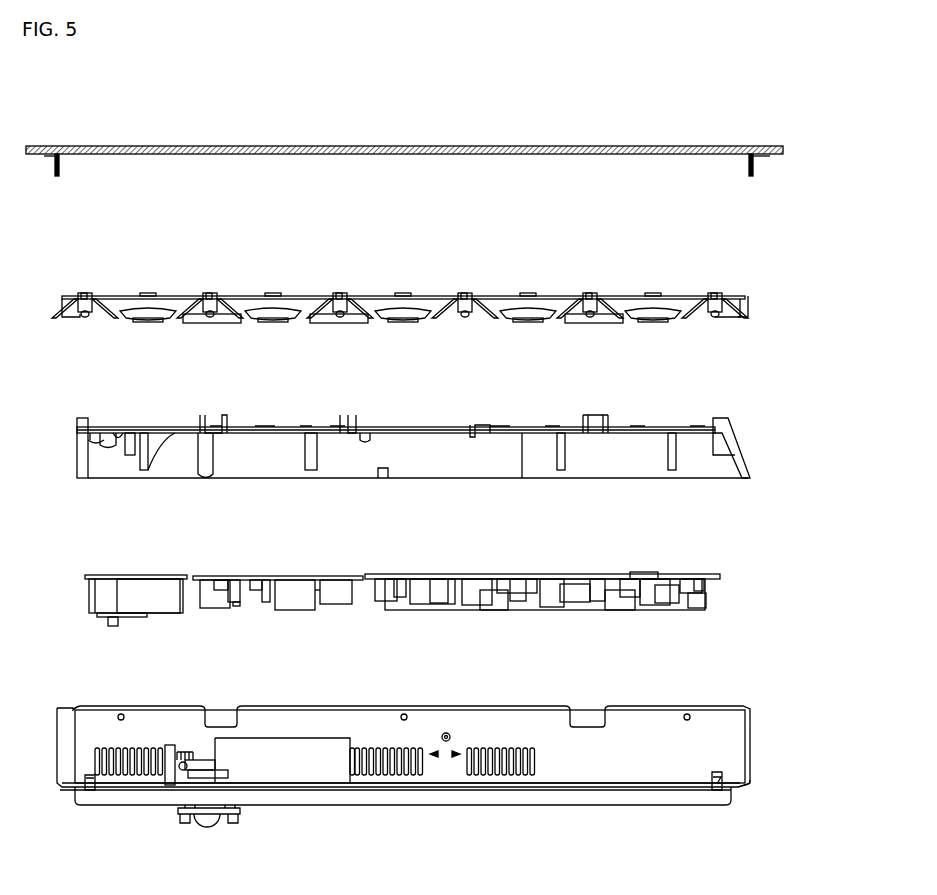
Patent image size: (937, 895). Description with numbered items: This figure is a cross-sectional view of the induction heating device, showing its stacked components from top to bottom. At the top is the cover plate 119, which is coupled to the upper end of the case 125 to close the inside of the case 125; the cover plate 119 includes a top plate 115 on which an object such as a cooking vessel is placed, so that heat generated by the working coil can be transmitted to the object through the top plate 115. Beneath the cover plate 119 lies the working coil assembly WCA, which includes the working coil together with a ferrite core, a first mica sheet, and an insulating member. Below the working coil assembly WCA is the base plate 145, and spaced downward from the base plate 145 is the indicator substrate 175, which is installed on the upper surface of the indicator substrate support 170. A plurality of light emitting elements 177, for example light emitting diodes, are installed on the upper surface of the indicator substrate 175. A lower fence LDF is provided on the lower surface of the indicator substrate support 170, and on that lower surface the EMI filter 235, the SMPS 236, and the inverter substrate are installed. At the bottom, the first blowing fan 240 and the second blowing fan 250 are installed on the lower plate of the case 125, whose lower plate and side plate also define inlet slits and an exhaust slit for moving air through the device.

The top plate 115 is at (380, 143).
The cover plate 119 is at (634, 142).
The working coil assembly WCA is at (661, 282).
The base plate 145 is at (745, 302).
The lower fence LDF is at (752, 455).
The indicator substrate support 170 is at (740, 428).
The indicator substrate 175 is at (653, 426).
The light emitting element 177 is at (130, 425).
The EMI filter 235 is at (153, 590).
The SMPS 236 is at (268, 575).
The case 125 is at (657, 718).
The first blowing fan 240 is at (285, 765).
The second blowing fan 250 is at (170, 760).